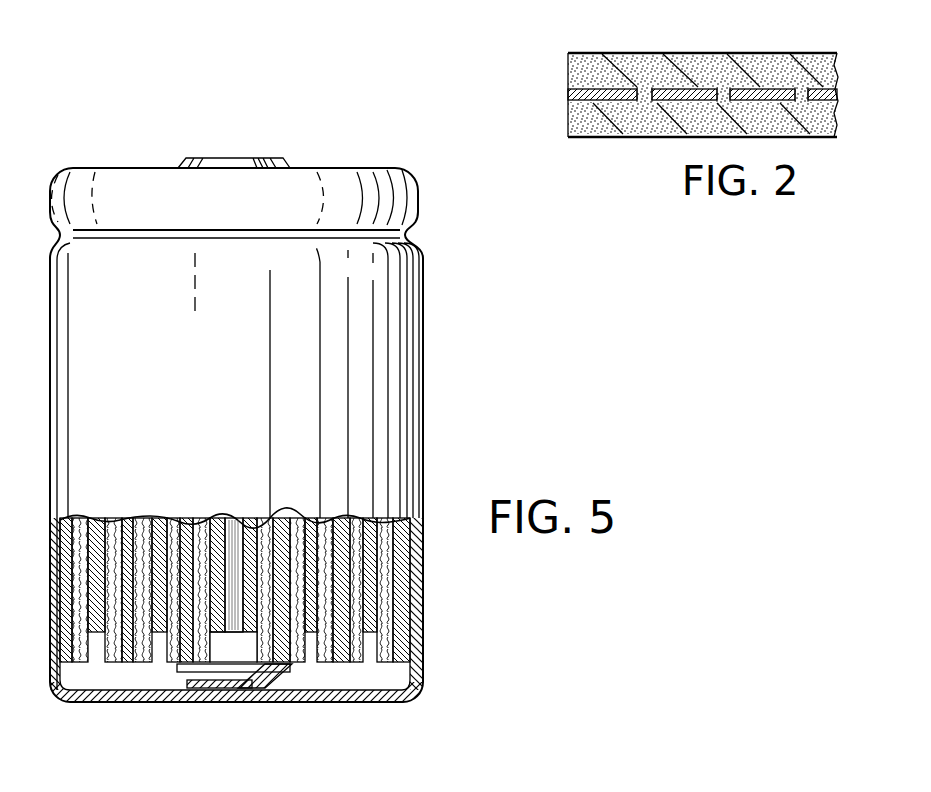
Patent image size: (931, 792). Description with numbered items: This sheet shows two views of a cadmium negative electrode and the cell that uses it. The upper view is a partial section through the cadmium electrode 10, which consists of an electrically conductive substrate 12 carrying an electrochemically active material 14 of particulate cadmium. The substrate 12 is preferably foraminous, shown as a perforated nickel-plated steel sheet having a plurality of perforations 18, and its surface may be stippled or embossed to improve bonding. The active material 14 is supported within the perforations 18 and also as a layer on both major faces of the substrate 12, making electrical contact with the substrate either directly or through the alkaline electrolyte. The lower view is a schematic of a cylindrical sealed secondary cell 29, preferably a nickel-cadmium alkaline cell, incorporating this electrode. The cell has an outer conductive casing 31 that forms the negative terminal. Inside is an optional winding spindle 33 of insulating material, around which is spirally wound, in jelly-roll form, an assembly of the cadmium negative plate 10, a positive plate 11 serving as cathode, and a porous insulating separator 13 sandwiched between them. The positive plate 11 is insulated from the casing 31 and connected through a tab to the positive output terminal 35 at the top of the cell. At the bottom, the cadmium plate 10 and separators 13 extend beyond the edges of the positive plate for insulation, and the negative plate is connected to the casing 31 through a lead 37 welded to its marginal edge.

In FIG. 2, the electrochemically active material 14 is at (712, 72).
In FIG. 2, the electrically conductive substrate 12 is at (833, 89).
In FIG. 2, the perforations 18 is at (813, 97).
In FIG. 5, the secondary cell 29 is at (462, 361).
In FIG. 5, the outer conductive casing 31 is at (412, 290).
In FIG. 5, the positive output terminal 35 is at (228, 159).
In FIG. 5, the cadmium electrode 10 is at (70, 515).
In FIG. 5, the positive plate 11 is at (97, 514).
In FIG. 5, the porous insulating separator 13 is at (203, 522).
In FIG. 5, the winding spindle 33 is at (214, 522).
In FIG. 5, the lead 37 is at (247, 702).